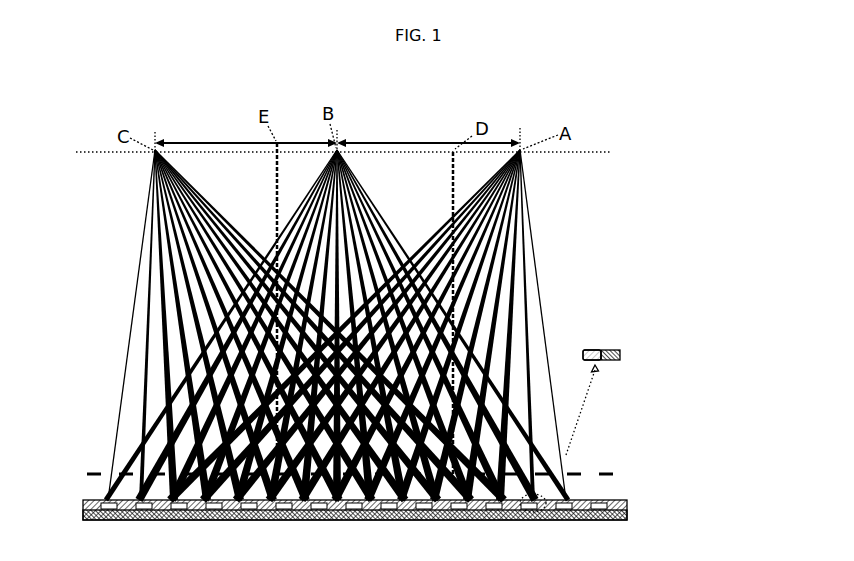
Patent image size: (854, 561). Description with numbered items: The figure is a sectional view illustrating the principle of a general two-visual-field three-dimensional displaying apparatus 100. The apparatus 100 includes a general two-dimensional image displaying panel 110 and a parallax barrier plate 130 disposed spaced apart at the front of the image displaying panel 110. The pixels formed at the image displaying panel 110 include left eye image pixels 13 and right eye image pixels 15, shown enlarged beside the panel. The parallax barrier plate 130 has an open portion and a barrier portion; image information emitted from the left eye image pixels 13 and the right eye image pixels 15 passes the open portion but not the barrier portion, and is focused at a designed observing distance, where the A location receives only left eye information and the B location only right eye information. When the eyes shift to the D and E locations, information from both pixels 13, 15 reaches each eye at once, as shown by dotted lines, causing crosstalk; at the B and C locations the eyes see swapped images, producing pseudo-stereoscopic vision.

The 2-visual field 3-dimensional displaying apparatus 100 is at (428, 490).
The image displaying panel 110 is at (636, 505).
The parallax barrier plate 130 is at (618, 474).
The left eye image pixels 13 is at (591, 348).
The right eye image pixels 15 is at (613, 348).